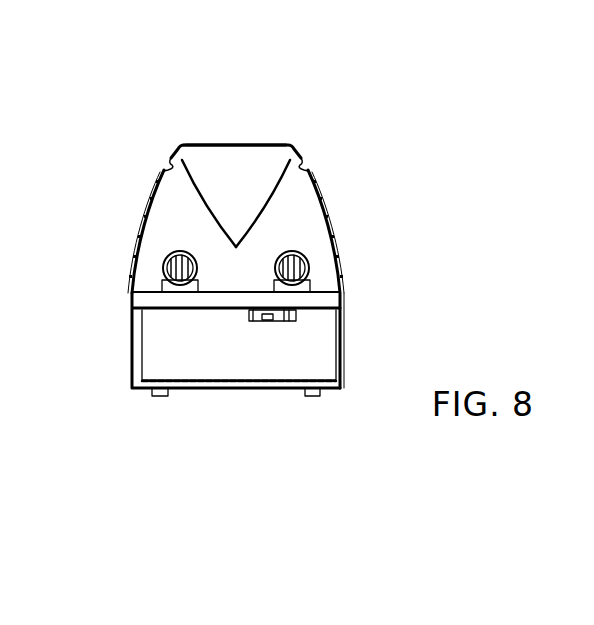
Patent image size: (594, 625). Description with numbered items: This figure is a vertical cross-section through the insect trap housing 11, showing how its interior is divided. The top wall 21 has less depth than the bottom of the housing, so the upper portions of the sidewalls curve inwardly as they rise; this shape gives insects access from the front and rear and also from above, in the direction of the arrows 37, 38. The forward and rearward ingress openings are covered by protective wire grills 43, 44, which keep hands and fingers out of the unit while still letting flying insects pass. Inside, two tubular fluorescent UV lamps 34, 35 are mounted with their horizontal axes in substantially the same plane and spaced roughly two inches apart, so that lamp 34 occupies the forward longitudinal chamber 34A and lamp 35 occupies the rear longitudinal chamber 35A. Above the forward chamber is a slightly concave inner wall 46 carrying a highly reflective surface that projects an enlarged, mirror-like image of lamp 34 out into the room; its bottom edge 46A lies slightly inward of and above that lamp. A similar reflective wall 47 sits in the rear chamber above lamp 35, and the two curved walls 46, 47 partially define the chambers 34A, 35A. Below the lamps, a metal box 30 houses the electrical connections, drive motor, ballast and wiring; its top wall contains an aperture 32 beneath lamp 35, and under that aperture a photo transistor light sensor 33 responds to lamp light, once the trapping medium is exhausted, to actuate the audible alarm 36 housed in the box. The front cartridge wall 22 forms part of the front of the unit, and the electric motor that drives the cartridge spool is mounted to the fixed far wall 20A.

The housing 11 is at (269, 122).
The top wall 21 is at (222, 135).
The arrow 38 is at (146, 110).
The arrow 37 is at (332, 110).
The protective wire grill 43 is at (140, 181).
The protective wire grill 44 is at (333, 181).
The curved inner wall 46 is at (184, 191).
The reflective wall 47 is at (283, 191).
The bottom edge 46A is at (236, 258).
The forward longitudinal chamber 34A is at (168, 233).
The rear longitudinal chamber 35A is at (282, 233).
The first UV lamp 34 is at (150, 265).
The second UV lamp 35 is at (323, 265).
The aperture 32 is at (306, 304).
The front cartridge wall 22 is at (122, 341).
The metal box 30 is at (173, 354).
The light sensor 33 is at (313, 321).
The audible alarm 36 is at (283, 327).
The fixed far wall 20A is at (360, 352).